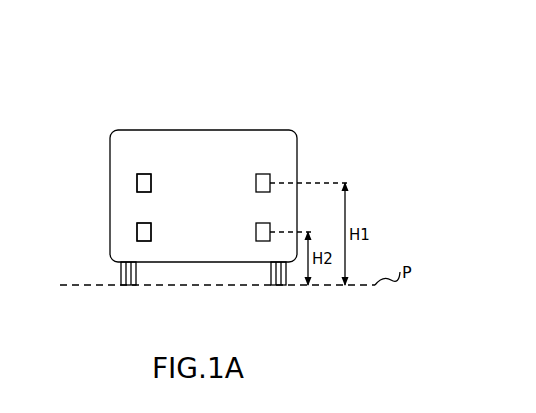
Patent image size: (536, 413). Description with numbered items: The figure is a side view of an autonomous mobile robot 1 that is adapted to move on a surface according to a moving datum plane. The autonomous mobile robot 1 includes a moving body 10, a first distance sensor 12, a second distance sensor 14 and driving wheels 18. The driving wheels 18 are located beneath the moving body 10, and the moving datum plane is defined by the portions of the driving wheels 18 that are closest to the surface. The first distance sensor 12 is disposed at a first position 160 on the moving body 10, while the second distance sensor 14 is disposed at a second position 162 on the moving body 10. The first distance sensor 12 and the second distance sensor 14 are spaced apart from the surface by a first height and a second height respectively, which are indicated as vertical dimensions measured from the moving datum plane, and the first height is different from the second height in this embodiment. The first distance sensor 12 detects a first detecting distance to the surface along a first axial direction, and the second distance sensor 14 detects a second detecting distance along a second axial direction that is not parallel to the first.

The autonomous mobile robot 1 is at (97, 108).
The moving body 10 is at (113, 146).
The first distance sensor 12 is at (137, 182).
The second distance sensor 14 is at (137, 231).
The first position 160 is at (134, 175).
The second position 162 is at (136, 222).
The driving wheels 18 is at (131, 286).